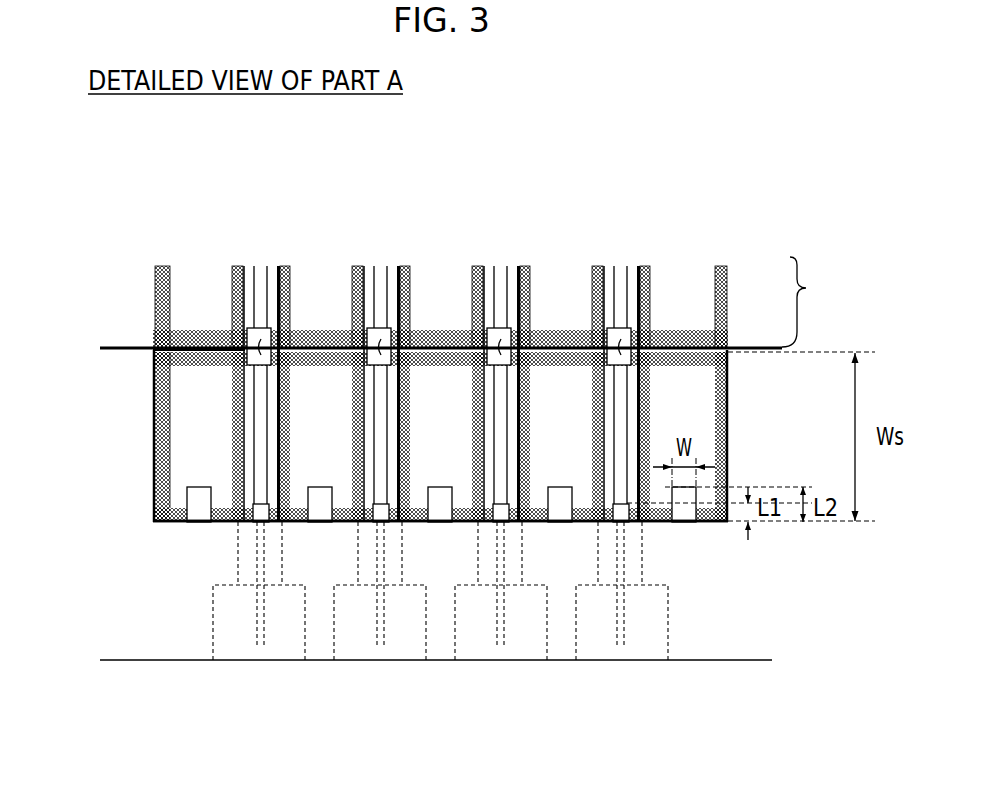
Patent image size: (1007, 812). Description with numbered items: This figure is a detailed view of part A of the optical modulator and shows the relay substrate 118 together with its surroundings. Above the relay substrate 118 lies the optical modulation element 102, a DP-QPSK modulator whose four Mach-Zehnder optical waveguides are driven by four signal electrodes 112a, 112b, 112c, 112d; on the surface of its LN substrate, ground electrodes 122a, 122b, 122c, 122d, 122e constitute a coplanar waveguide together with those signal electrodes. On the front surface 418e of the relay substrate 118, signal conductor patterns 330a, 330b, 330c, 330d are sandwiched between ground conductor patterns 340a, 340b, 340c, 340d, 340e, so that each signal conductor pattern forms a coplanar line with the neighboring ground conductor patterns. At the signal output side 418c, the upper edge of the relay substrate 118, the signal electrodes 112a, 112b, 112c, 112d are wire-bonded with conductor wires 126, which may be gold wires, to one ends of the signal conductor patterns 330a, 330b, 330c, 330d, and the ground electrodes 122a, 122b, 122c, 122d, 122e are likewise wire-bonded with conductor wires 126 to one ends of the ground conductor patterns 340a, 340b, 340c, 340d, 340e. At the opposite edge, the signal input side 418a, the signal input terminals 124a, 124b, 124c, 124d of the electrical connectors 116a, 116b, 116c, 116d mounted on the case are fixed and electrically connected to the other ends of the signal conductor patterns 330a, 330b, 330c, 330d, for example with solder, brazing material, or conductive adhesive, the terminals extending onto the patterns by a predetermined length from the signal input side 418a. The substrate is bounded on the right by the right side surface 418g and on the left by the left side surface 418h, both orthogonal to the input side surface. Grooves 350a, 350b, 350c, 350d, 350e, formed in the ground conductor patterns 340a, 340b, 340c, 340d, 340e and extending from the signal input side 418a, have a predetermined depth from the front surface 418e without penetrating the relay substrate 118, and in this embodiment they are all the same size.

The optical modulation element 102 is at (820, 302).
The signal electrode 112a is at (615, 277).
The signal electrode 112b is at (495, 277).
The signal electrode 112c is at (375, 277).
The signal electrode 112d is at (255, 277).
The electrical connector 116a is at (668, 635).
The electrical connector 116b is at (548, 633).
The electrical connector 116c is at (334, 634).
The electrical connector 116d is at (213, 634).
The relay substrate 118 is at (154, 378).
The ground electrode 122a is at (685, 275).
The ground electrode 122b is at (565, 275).
The ground electrode 122c is at (442, 275).
The ground electrode 122d is at (325, 275).
The ground electrode 122e is at (193, 275).
The signal input terminal 124a is at (622, 507).
The signal input terminal 124b is at (501, 505).
The signal input terminal 124c is at (381, 505).
The signal input terminal 124d is at (261, 505).
The conductor wire 126 is at (677, 340).
The signal conductor pattern 330a is at (622, 431).
The signal conductor pattern 330b is at (502, 431).
The signal conductor pattern 330c is at (382, 431).
The signal conductor pattern 330d is at (262, 431).
The ground conductor pattern 340a is at (710, 514).
The ground conductor pattern 340b is at (587, 514).
The ground conductor pattern 340c is at (465, 514).
The ground conductor pattern 340d is at (343, 514).
The ground conductor pattern 340e is at (222, 514).
The groove 350a is at (685, 512).
The groove 350b is at (562, 512).
The groove 350c is at (440, 512).
The groove 350d is at (319, 512).
The groove 350e is at (199, 512).
The signal input side 418a is at (162, 523).
The signal output side 418c is at (164, 349).
The front surface 418e is at (175, 467).
The right side surface 418g is at (728, 398).
The left side surface 418h is at (154, 410).